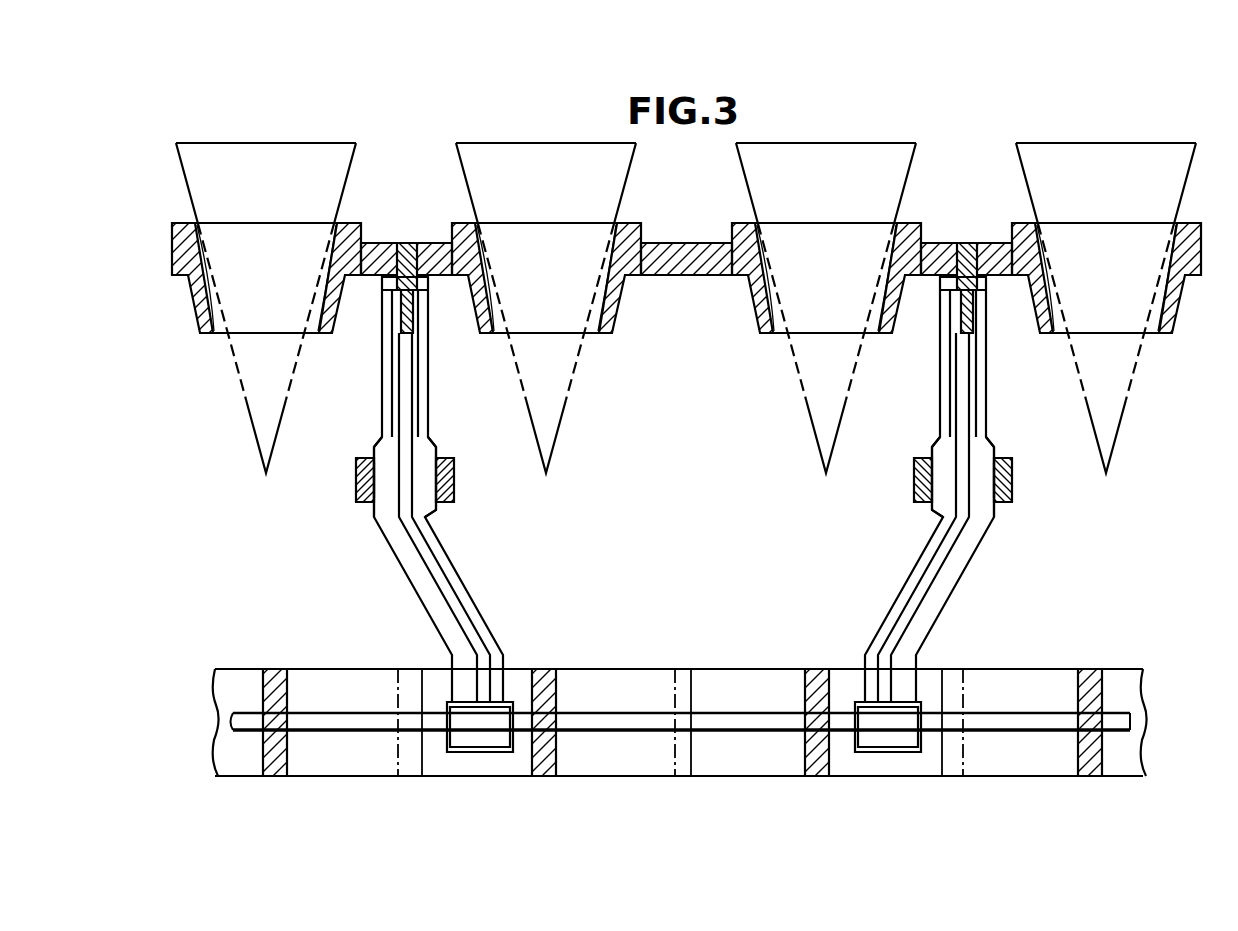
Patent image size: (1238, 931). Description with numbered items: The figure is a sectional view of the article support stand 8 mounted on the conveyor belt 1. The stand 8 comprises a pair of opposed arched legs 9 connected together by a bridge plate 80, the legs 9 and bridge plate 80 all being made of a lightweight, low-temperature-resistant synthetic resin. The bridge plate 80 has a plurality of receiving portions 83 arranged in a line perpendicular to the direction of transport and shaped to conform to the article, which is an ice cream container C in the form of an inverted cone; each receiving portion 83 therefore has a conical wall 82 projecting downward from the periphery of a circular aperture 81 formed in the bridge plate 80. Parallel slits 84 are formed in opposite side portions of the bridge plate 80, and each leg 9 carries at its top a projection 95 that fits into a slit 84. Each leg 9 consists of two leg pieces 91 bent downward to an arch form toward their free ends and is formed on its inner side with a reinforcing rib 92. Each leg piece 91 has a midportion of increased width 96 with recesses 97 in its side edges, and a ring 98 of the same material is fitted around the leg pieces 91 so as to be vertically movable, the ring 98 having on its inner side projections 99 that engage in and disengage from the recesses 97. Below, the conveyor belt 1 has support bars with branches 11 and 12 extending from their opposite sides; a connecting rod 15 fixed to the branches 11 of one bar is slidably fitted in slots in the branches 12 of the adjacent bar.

The conveyor belt 1 is at (680, 726).
The article support stand 8 is at (649, 284).
The arched leg 9 is at (682, 514).
The branch 11 is at (277, 768).
The branch 12 is at (406, 770).
The connecting rod 15 is at (640, 722).
The bridge plate 80 is at (685, 256).
The circular aperture 81 is at (667, 257).
The conical wall 82 is at (190, 292).
The receiving portion 83 is at (649, 257).
The slit 84 is at (700, 253).
The leg piece 91 is at (392, 393).
The reinforcing rib 92 is at (406, 456).
The projection 95 is at (407, 242).
The midportion of increased width 96 is at (418, 512).
The recess 97 is at (380, 496).
The ring 98 is at (372, 488).
The projection 99 is at (362, 468).
The ice cream container C is at (288, 143).